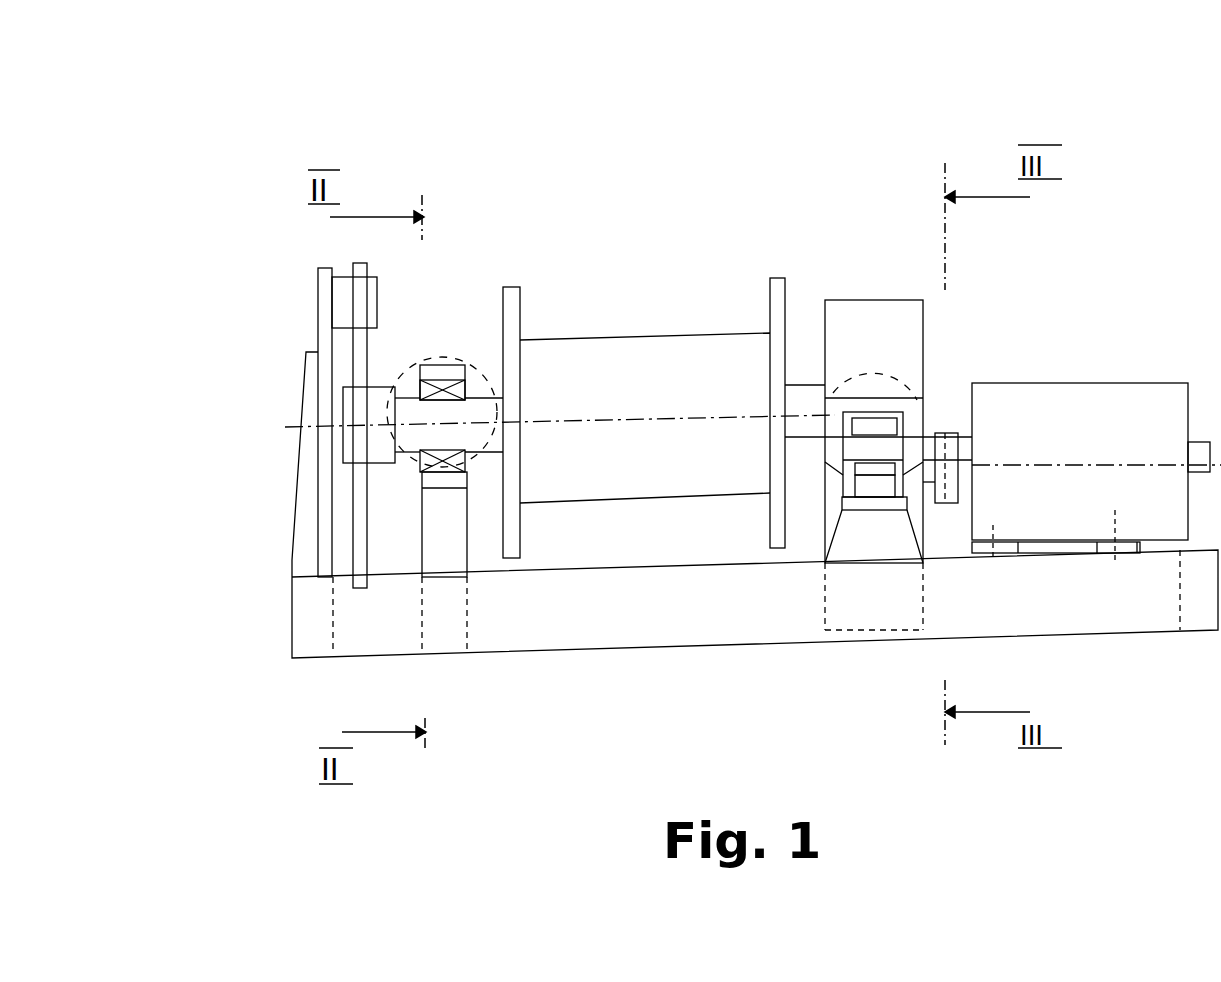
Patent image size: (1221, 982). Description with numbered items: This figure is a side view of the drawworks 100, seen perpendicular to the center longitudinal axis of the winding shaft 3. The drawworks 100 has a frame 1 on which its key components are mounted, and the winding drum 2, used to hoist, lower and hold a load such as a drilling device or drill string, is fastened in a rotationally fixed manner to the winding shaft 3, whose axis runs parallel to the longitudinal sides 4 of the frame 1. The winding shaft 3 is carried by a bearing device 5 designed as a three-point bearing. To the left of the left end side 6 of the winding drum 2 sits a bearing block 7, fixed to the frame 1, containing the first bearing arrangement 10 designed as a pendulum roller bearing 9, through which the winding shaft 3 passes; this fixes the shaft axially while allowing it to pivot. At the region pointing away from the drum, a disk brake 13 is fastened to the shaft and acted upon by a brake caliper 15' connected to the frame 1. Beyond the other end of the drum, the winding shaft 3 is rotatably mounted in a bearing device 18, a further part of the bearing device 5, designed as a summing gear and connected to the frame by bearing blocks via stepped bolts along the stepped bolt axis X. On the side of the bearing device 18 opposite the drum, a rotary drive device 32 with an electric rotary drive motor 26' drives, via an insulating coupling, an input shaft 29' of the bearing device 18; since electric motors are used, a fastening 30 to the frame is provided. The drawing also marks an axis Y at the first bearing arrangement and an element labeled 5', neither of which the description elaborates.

The drawworks 100 is at (177, 228).
The frame 1 is at (308, 612).
The winding drum 2 is at (650, 372).
The winding shaft 3 is at (800, 397).
The longitudinal sides 4 is at (750, 633).
The bearing device 5 is at (672, 483).
The bearing block 5' is at (354, 390).
The left end side 6 is at (495, 473).
The bearing block 7 is at (505, 530).
The pendulum roller bearing 9 is at (430, 370).
The first bearing arrangement 10 is at (470, 333).
The disk brake 13 is at (355, 510).
The brake caliper 15' is at (282, 403).
The bearing device 18 is at (903, 297).
The rotary drive motor 26' is at (1091, 389).
The input shaft 29' is at (977, 365).
The fastening 30 is at (1120, 553).
The rotary drive device 32 is at (838, 115).
The stepped bolt axis X is at (905, 445).
The axis Y is at (437, 370).